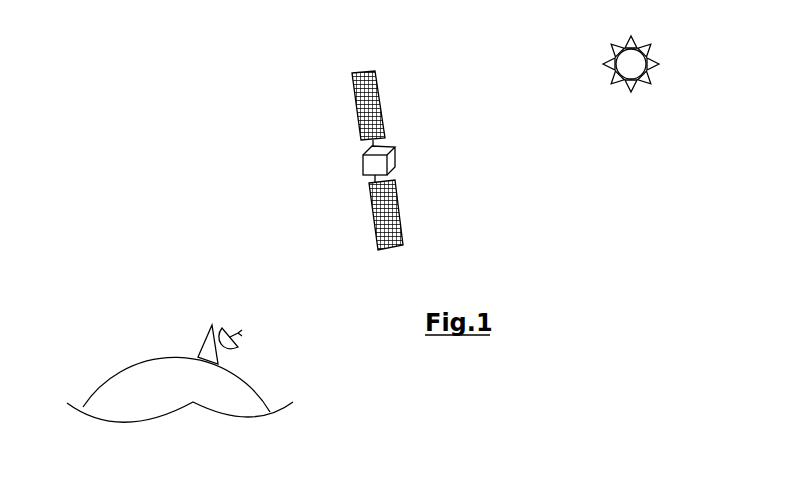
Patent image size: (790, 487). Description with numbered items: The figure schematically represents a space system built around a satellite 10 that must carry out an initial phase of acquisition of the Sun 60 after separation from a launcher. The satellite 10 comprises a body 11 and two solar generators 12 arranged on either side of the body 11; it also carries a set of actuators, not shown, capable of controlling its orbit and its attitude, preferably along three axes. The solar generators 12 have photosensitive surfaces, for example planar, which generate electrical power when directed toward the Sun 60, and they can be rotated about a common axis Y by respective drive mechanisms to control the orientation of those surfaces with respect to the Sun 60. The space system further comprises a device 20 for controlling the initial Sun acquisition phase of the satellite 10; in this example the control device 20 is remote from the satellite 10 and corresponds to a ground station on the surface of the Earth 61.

The satellite 10 is at (377, 160).
The body 11 is at (396, 152).
The solar generators 12 is at (385, 95).
The device for controlling the initial phase of acquisition of the Sun 20 is at (212, 325).
The Sun 60 is at (635, 87).
The Earth 61 is at (118, 372).